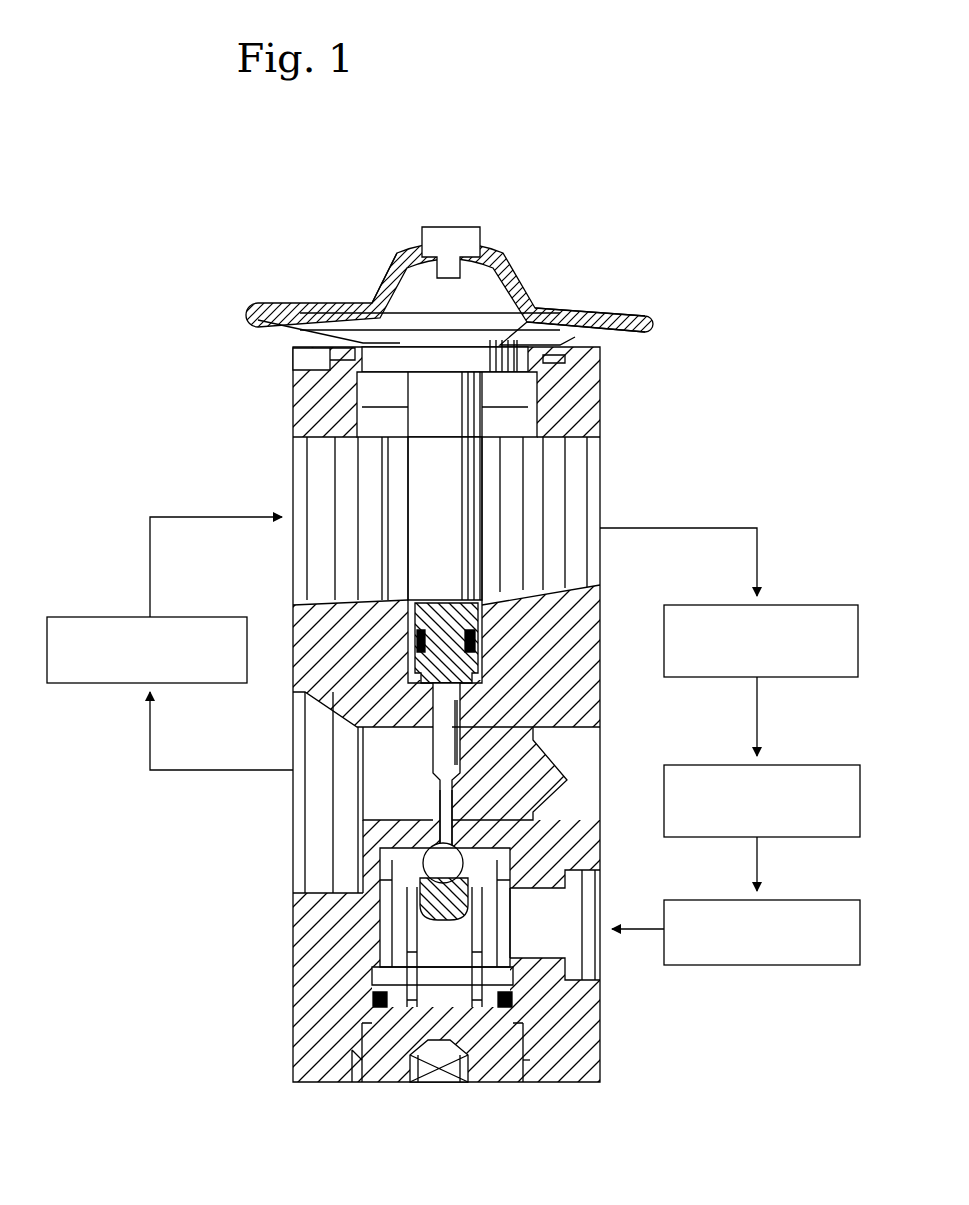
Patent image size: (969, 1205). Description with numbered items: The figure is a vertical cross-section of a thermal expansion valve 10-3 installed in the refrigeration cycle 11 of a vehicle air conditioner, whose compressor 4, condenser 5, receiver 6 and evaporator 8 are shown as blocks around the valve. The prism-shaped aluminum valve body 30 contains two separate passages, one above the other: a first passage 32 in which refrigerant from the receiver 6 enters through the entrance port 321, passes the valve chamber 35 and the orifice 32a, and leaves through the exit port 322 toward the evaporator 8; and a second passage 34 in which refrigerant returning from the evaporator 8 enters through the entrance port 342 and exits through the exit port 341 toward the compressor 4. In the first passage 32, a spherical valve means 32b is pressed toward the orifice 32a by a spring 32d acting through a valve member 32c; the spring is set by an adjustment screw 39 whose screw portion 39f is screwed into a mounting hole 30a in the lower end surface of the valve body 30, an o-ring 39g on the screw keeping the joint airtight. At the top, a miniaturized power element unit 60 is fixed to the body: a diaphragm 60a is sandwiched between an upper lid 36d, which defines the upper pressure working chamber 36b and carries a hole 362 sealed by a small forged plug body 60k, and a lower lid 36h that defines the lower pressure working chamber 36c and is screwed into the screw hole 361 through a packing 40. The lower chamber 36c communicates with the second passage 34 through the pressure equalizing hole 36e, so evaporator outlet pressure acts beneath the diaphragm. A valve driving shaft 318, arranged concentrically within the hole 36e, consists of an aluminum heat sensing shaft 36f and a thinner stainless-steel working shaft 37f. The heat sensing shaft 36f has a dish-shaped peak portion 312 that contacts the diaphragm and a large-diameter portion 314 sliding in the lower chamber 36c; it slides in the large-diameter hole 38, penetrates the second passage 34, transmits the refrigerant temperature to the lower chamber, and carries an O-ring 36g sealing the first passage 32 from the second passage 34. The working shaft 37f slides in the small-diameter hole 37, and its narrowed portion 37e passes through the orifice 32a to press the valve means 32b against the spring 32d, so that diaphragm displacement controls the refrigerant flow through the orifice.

The thermal expansion valve 10-3 is at (258, 285).
The plug body 60k is at (440, 228).
The upper pressure working chamber 36b is at (478, 278).
The hole 362 is at (398, 252).
The upper lid 36d is at (338, 302).
The peak portion 312 is at (500, 320).
The large-diameter portion 314 is at (557, 318).
The diaphragm 60a is at (600, 310).
The power element unit 60 is at (672, 322).
The lower lid 36h is at (640, 334).
The packing 40 is at (350, 380).
The lower pressure working chamber 36c is at (380, 390).
The valve body 30 is at (598, 388).
The screw hole 361 is at (580, 405).
The pressure equalizing hole 36e is at (400, 440).
The valve driving shaft 318 is at (420, 495).
The exit port 341 is at (603, 475).
The entrance port 342 is at (292, 502).
The heat sensing shaft 36f is at (400, 555).
The evaporator 8 is at (95, 615).
The second passage 34 is at (580, 575).
The compressor 4 is at (808, 604).
The large-diameter hole 38 is at (380, 620).
The small-diameter hole 37 is at (300, 690).
The O-ring 36g is at (480, 650).
The working shaft 37f is at (545, 760).
The refrigeration cycle 11 is at (757, 718).
The condenser 5 is at (845, 764).
The orifice 32a is at (470, 830).
The portion of the working shaft 37e is at (440, 792).
The exit port 322 is at (320, 850).
The valve means 32b is at (470, 855).
The valve member 32c is at (390, 895).
The spring 32d is at (400, 930).
The valve chamber 35 is at (405, 960).
The seal ring 39g is at (375, 1000).
The entrance port 321 is at (600, 955).
The first passage 32 is at (605, 980).
The mounting hole 30a is at (518, 1060).
The screw portion 39f is at (365, 1088).
The adjustment screw 39 is at (493, 1088).
The receiver 6 is at (843, 899).